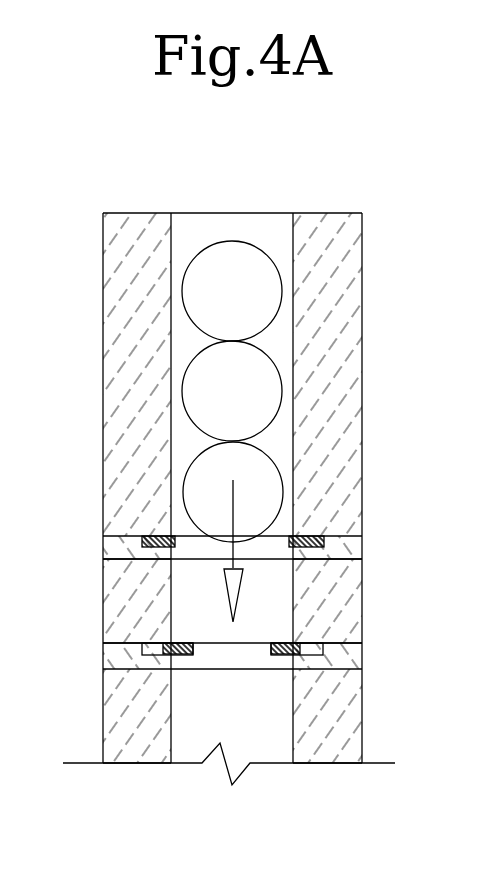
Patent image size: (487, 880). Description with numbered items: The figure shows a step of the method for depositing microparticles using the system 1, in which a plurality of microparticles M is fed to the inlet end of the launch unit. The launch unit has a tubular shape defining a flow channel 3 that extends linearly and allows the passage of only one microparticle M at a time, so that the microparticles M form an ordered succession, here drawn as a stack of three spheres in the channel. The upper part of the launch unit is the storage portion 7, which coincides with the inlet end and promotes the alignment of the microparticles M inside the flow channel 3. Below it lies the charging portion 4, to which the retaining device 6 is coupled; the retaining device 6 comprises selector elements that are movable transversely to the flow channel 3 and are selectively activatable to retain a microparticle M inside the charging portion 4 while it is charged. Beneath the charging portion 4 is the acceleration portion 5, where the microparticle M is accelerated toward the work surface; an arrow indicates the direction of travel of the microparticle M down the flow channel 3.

The system for the deposition of microparticles 1 is at (238, 213).
The storage portion 7 is at (103, 314).
The flow channel 3 is at (283, 338).
The microparticle M is at (258, 482).
The charging portion 4 is at (103, 603).
The acceleration portion 5 is at (103, 700).
The retaining device 6 is at (310, 547).